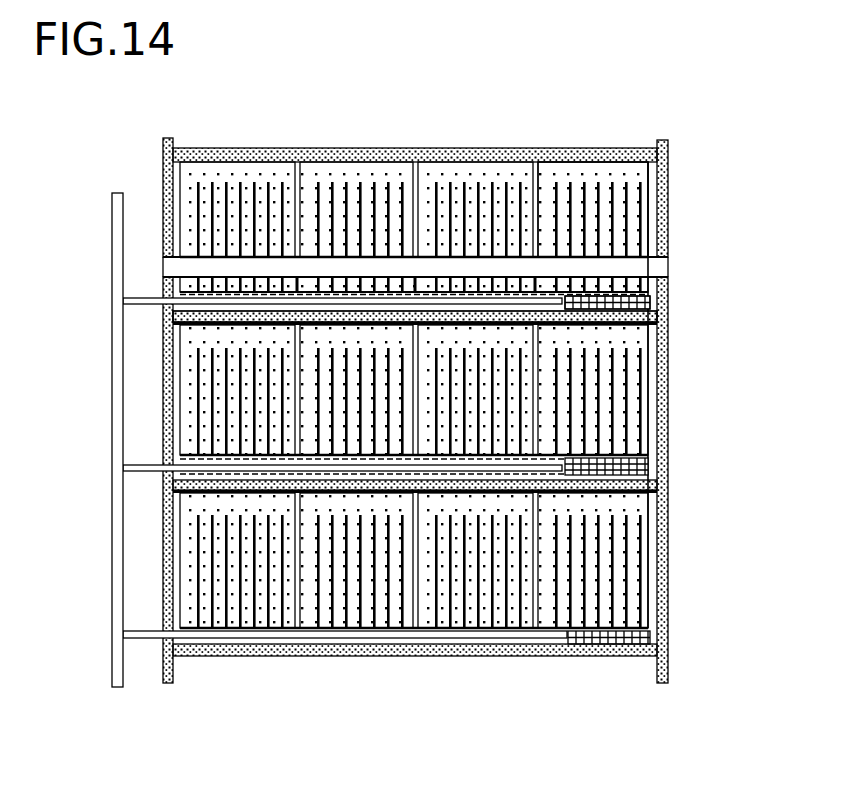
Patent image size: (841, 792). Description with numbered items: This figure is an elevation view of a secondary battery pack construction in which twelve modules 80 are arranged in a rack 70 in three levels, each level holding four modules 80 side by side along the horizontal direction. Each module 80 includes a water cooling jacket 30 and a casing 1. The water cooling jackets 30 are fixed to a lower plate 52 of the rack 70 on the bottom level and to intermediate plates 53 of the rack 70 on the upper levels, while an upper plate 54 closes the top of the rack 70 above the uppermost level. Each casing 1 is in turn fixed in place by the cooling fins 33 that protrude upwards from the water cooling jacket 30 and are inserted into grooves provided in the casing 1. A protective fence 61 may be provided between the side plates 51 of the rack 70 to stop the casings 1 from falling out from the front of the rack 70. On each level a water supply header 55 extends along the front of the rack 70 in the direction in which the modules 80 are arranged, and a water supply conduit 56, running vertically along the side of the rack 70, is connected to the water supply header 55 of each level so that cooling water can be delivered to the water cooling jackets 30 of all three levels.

The casing 1 is at (553, 160).
The water cooling jacket 30 is at (641, 300).
The cooling fins 33 is at (634, 220).
The side plates 51 is at (660, 318).
The lower plate 52 is at (283, 658).
The intermediate plates 53 is at (167, 315).
The top plate 54 is at (271, 147).
The water supply header 55 is at (152, 299).
The water supply conduit 56 is at (111, 578).
The protective fence 61 is at (180, 265).
The rack 70 is at (423, 114).
The modules 80 is at (648, 177).